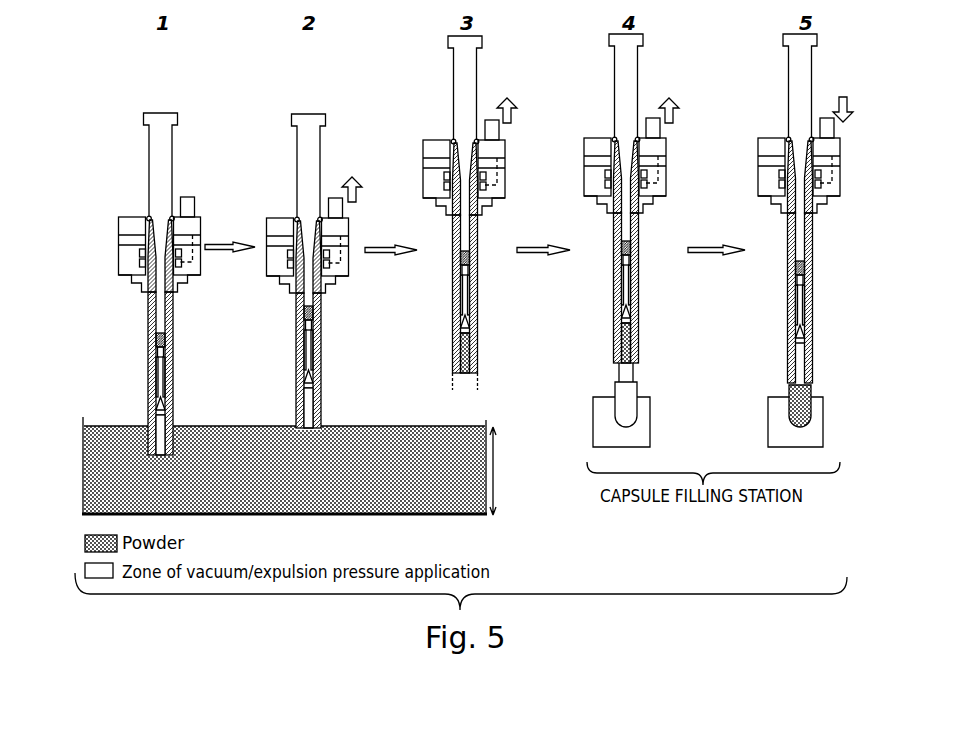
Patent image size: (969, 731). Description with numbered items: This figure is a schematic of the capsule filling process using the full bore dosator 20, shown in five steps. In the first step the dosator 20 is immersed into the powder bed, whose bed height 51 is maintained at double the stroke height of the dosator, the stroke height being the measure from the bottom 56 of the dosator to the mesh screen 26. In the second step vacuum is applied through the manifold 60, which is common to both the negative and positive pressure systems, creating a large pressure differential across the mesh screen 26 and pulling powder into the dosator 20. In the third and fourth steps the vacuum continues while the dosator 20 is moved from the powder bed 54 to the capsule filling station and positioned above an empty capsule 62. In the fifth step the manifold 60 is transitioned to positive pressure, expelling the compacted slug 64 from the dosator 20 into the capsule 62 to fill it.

The dosator 20 is at (148, 149).
The manifold 60 is at (128, 217).
The mesh screen 26 is at (170, 393).
The bottom of the dosator 56 is at (145, 465).
The powder bed 54 is at (92, 467).
The powder bed height 51 is at (495, 461).
The slug 64 is at (627, 337).
The capsule 62 is at (630, 397).